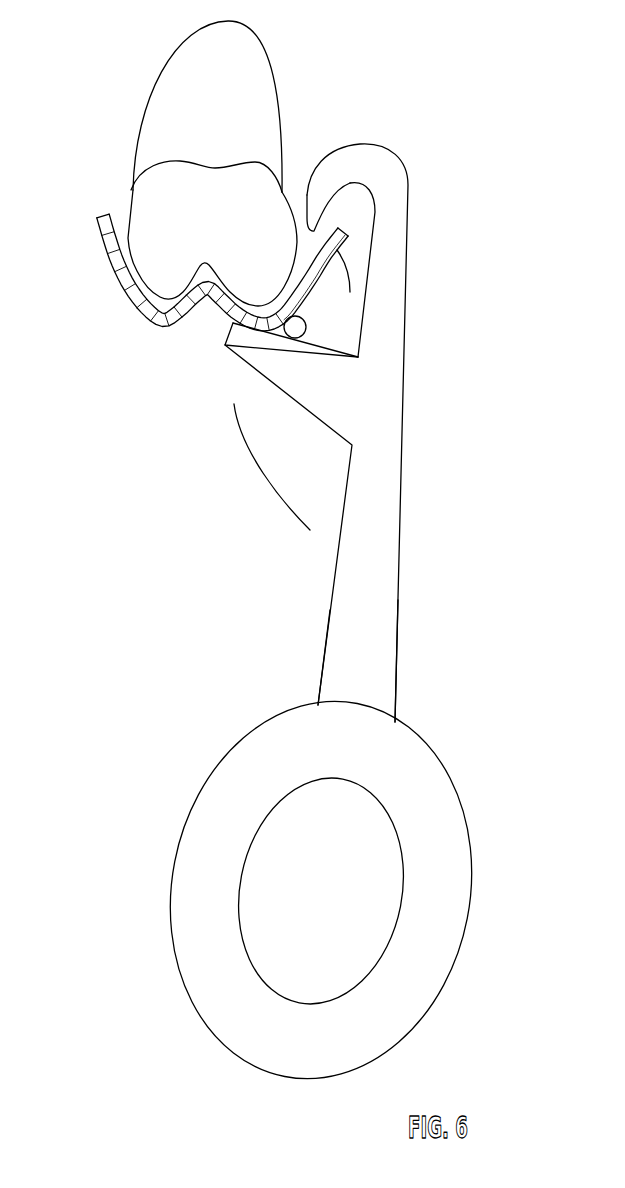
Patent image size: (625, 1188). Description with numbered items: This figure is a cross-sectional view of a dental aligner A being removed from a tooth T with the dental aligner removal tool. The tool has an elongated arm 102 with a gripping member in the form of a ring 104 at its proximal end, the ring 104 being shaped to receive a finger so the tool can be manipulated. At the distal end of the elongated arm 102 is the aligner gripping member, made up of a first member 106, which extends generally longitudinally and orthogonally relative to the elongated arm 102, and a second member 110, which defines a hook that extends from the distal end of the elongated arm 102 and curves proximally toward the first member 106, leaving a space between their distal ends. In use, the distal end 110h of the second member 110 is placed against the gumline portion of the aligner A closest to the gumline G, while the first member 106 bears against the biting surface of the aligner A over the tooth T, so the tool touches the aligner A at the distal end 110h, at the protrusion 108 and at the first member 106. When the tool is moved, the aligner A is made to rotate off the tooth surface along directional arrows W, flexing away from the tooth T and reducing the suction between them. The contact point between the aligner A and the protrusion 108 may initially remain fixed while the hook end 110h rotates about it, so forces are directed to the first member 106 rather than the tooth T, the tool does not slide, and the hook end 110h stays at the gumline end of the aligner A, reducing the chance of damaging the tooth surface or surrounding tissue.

The gumline G is at (167, 93).
The tooth T is at (155, 218).
The aligner A is at (90, 245).
The directional arrows W is at (516, 262).
The elongated arm 102 is at (377, 602).
The ring 104 is at (442, 922).
The first member 106 is at (270, 362).
The protrusion 108 is at (316, 327).
The second member 110 is at (390, 286).
The distal end 110h is at (307, 195).